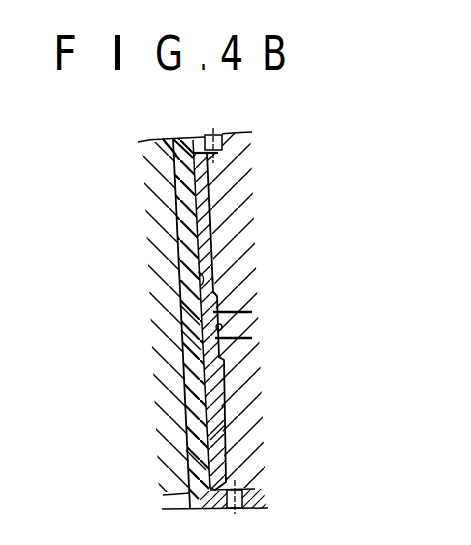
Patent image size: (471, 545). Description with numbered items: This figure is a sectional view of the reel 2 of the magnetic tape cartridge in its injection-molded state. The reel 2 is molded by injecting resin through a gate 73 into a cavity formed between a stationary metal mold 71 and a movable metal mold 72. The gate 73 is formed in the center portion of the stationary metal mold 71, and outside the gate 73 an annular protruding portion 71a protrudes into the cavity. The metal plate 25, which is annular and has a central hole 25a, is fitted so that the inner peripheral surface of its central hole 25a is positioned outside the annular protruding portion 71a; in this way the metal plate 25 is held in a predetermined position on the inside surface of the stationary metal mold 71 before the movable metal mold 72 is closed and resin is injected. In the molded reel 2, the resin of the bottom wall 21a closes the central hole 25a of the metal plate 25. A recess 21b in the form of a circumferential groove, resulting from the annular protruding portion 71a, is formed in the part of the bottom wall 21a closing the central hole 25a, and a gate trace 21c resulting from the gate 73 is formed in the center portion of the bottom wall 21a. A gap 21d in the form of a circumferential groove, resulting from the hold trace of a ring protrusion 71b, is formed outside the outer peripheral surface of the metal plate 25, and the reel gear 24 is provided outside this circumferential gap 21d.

The reel 2 is at (180, 127).
The bottom wall 21a is at (175, 205).
The recess 21b is at (191, 338).
The gate trace 21c is at (190, 322).
The gap 21d is at (188, 497).
The reel gear 24 is at (252, 490).
The metal plate 25 is at (209, 203).
The central hole 25a is at (190, 285).
The stationary metal mold 71 is at (238, 453).
The annular protruding portion 71a is at (220, 350).
The ring protrusion 71b is at (226, 152).
The movable metal mold 72 is at (186, 464).
The gate 73 is at (243, 318).